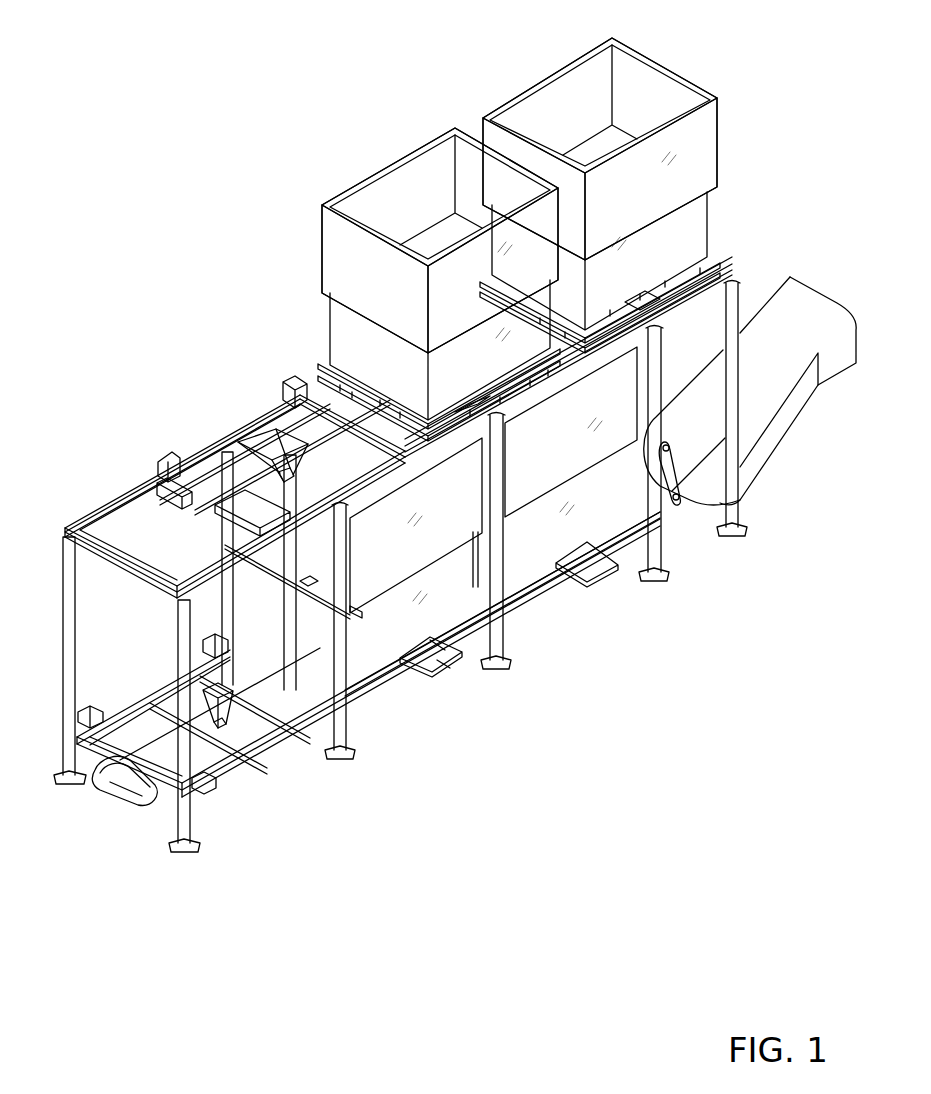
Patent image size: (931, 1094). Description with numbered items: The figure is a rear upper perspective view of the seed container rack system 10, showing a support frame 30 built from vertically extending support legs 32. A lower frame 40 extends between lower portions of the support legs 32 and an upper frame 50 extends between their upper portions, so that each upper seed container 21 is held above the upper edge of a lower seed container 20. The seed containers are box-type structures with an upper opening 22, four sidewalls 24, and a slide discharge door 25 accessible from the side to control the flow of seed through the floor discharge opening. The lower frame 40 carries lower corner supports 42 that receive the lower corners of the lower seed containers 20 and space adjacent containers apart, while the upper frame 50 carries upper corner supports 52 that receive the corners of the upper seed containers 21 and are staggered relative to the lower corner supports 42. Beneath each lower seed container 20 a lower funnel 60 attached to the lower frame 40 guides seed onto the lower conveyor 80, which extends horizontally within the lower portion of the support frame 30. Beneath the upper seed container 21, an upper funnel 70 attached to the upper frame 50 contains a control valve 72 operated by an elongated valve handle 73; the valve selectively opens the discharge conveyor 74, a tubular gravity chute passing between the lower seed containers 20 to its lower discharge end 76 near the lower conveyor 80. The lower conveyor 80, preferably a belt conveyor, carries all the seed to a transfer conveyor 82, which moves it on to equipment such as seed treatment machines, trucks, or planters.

The seed container rack system 10 is at (181, 104).
The lower seed container 20 is at (462, 642).
The upper seed container 21 is at (720, 138).
The upper opening 22 is at (400, 158).
The sidewalls 24 is at (690, 171).
The slide discharge door 25 is at (650, 288).
The support frame 30 is at (666, 548).
The support legs 32 is at (76, 665).
The lower frame 40 is at (552, 602).
The lower corner supports 42 is at (84, 712).
The upper frame 50 is at (122, 494).
The upper corner supports 52 is at (295, 375).
The lower funnel 60 is at (227, 715).
The upper funnel 70 is at (268, 440).
The control valve 72 is at (298, 584).
The valve handle 73 is at (446, 664).
The discharge conveyor 74 is at (268, 497).
The lower discharge end 76 is at (302, 735).
The lower conveyor 80 is at (106, 812).
The transfer conveyor 82 is at (769, 301).